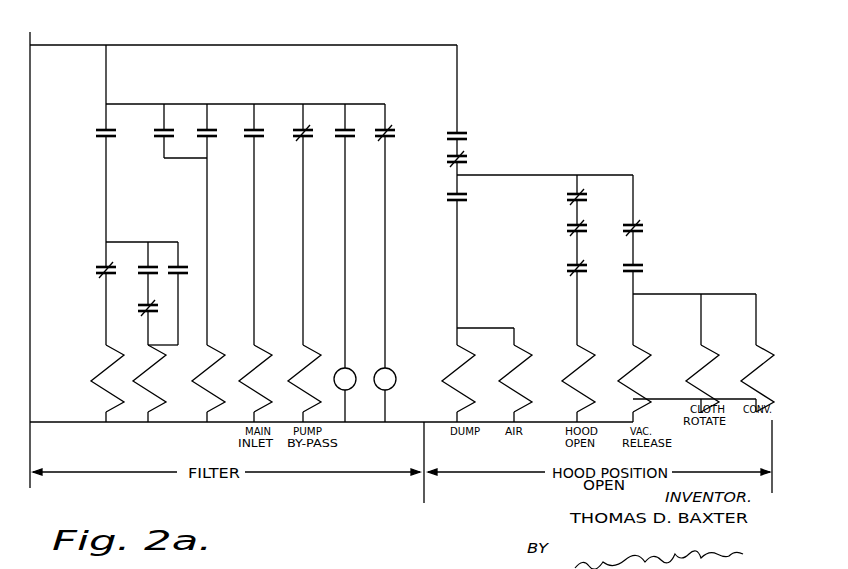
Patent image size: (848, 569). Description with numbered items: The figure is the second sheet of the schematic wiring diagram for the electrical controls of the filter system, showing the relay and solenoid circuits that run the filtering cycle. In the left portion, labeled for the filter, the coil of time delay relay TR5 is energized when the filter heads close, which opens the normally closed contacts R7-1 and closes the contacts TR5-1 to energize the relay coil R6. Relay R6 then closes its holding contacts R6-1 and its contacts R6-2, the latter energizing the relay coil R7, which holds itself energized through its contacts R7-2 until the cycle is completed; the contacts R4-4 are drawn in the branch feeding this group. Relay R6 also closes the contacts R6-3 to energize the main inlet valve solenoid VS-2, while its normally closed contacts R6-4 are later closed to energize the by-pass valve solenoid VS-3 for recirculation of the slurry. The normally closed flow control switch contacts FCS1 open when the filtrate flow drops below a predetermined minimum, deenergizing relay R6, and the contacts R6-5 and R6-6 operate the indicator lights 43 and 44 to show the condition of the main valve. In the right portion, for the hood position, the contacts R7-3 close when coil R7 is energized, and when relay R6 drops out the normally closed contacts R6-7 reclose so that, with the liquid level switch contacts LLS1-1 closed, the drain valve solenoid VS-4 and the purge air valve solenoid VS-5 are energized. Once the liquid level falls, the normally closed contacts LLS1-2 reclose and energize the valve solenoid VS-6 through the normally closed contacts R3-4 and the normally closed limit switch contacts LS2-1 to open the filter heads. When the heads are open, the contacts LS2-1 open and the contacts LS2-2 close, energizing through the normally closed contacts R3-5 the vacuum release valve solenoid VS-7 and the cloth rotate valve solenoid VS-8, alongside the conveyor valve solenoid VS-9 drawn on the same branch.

The indicator light 43 is at (352, 371).
The indicator light 44 is at (393, 371).
The relay R4 contact 4 R4-4 is at (85, 140).
The relay R7 holding contacts R7-2 is at (149, 140).
The relay R6 contacts R6-2 is at (219, 140).
The relay R6 contacts R6-3 is at (265, 140).
The normally closed relay R6 contacts R6-4 is at (315, 138).
The relay R6 contacts R6-5 is at (356, 140).
The relay R6 contacts R6-6 is at (397, 138).
The normally closed relay R7 contacts R7-1 is at (85, 269).
The relay R6 holding contacts R6-1 is at (135, 281).
The flow control switch contacts FCS1 is at (133, 316).
The time delay relay contacts TR5-1 is at (188, 268).
The relay R7 contacts R7-3 is at (475, 128).
The normally closed relay R6 contacts R6-7 is at (477, 159).
The liquid level switch contacts LLS1-1 is at (482, 198).
The normally closed liquid level switch contacts LLS1-2 is at (553, 204).
The normally closed relay R3 contacts R3-4 is at (560, 234).
The normally closed limit switch LS2 contacts LS2-1 is at (552, 274).
The normally closed relay R3 contacts R3-5 is at (652, 230).
The limit switch LS2 contacts LS2-2 is at (656, 273).
The time delay relay coil TR5 is at (110, 378).
The relay R6 coil R6 is at (150, 378).
The relay R7 coil R7 is at (208, 378).
The main inlet valve solenoid VS-2 is at (261, 378).
The by-pass valve solenoid VS-3 is at (309, 378).
The drain valve solenoid VS-4 is at (464, 378).
The purge air valve solenoid VS-5 is at (519, 378).
The two-way air valve solenoid VS-6 is at (582, 378).
The vacuum release valve solenoid VS-7 is at (639, 378).
The cloth rotate valve solenoid VS-8 is at (706, 378).
The valve solenoid conveyor VS-9 is at (762, 378).